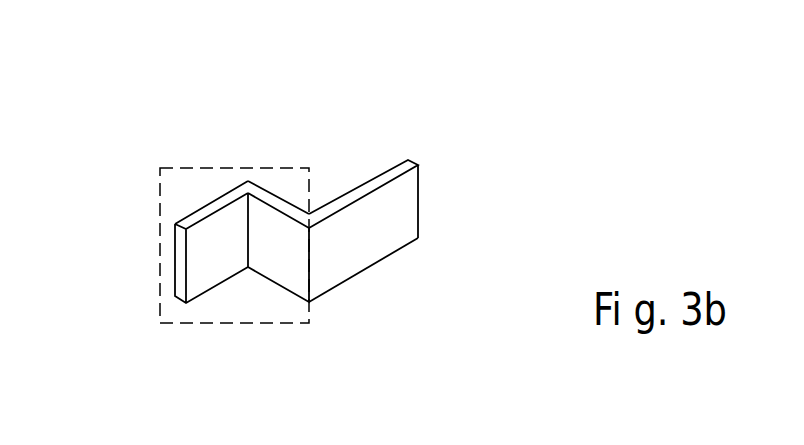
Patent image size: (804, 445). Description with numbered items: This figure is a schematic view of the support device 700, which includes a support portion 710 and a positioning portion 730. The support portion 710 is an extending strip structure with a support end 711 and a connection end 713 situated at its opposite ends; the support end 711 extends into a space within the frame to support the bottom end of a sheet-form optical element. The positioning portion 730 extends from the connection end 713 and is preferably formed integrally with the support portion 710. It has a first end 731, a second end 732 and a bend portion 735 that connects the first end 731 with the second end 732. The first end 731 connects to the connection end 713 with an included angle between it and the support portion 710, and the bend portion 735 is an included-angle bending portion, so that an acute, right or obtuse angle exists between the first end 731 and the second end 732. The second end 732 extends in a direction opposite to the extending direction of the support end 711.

The support device 700 is at (112, 138).
The support portion 710 is at (378, 218).
The support end 711 is at (413, 193).
The connection end 713 is at (313, 250).
The positioning portion 730 is at (234, 167).
The first end 731 is at (303, 260).
The second end 732 is at (192, 258).
The bend portion 735 is at (250, 183).